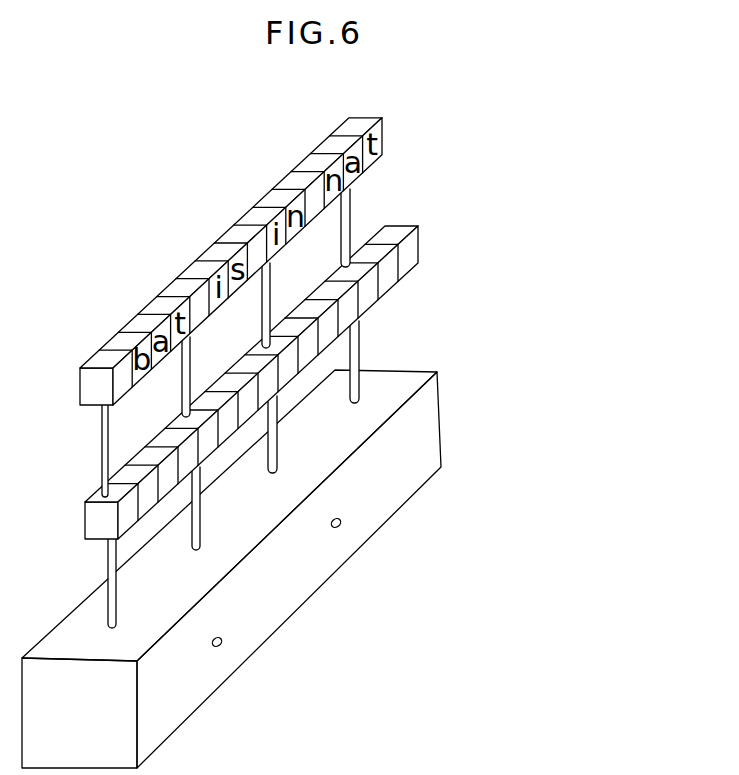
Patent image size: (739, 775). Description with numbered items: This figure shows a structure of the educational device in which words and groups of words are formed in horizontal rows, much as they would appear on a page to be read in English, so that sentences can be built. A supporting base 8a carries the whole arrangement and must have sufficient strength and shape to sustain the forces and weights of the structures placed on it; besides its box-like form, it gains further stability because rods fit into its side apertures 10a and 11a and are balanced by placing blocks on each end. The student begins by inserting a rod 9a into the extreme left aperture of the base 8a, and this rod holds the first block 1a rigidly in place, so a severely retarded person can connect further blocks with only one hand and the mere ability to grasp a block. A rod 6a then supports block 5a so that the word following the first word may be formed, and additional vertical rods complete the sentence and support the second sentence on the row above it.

The block 1a is at (84, 527).
The block 5a is at (183, 385).
The rod 6a is at (217, 518).
The base 8a is at (191, 724).
The rod 9a is at (107, 562).
The side aperture 10a is at (227, 642).
The side aperture 11a is at (345, 522).